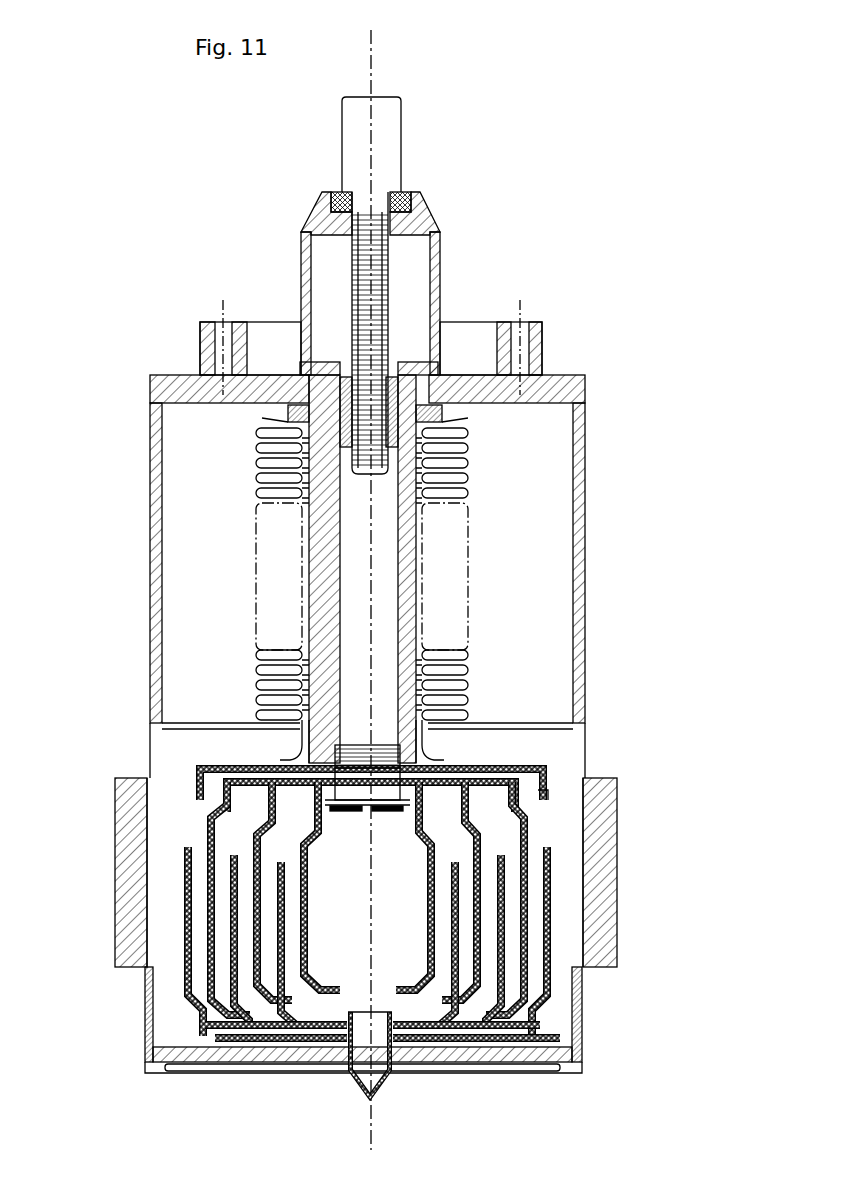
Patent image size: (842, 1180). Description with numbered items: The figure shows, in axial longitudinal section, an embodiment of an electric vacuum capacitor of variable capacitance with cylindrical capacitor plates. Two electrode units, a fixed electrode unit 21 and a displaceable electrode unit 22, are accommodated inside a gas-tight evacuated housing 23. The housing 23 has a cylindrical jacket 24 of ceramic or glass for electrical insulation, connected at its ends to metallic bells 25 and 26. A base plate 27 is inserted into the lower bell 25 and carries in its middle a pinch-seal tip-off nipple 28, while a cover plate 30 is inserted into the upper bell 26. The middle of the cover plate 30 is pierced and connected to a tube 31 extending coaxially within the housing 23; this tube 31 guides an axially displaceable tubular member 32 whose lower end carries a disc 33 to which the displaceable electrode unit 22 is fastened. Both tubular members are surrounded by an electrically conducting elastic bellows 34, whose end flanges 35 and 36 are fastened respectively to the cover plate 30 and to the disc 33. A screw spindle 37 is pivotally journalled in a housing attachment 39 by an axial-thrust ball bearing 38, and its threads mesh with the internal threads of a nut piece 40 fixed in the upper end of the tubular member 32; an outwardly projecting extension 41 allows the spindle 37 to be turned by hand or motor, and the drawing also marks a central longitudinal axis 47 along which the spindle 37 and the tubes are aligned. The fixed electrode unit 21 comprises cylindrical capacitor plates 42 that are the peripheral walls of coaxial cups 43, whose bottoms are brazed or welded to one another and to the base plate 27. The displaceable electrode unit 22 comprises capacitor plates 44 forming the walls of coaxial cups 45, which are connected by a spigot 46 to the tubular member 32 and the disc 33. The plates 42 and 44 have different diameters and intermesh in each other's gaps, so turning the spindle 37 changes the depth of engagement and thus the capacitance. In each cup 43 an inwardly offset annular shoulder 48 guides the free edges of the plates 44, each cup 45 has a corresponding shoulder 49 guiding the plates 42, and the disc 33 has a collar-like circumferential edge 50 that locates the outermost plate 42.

The fixed electrode unit 21 is at (160, 990).
The displaceable electrode unit 22 is at (175, 820).
The housing 23 is at (125, 680).
The cylindrical jacket 24 is at (115, 854).
The lower bell 25 is at (150, 1051).
The upper bell 26 is at (150, 514).
The base plate 27 is at (230, 1055).
The tip-off nipple 28 is at (347, 1080).
The cover plate 30 is at (185, 388).
The tube 31 is at (313, 598).
The tubular member 32 is at (305, 684).
The disc 33 is at (197, 771).
The bellows 34 is at (472, 507).
The end flange 35 is at (455, 419).
The end flange 36 is at (288, 751).
The screw spindle 37 is at (386, 284).
The axial-thrust ball bearing 38 is at (405, 193).
The housing attachment 39 is at (416, 224).
The nut piece 40 is at (347, 366).
The extension 41 is at (388, 136).
The capacitor plates 42 is at (305, 918).
The cups 43 is at (457, 1038).
The capacitor plates 44 is at (450, 918).
The cups 45 is at (425, 790).
The spigot 46 is at (347, 792).
The axis 47 is at (375, 78).
The annular shoulder 48 is at (530, 1022).
The shoulder 49 is at (505, 797).
The circumferential edge 50 is at (538, 789).